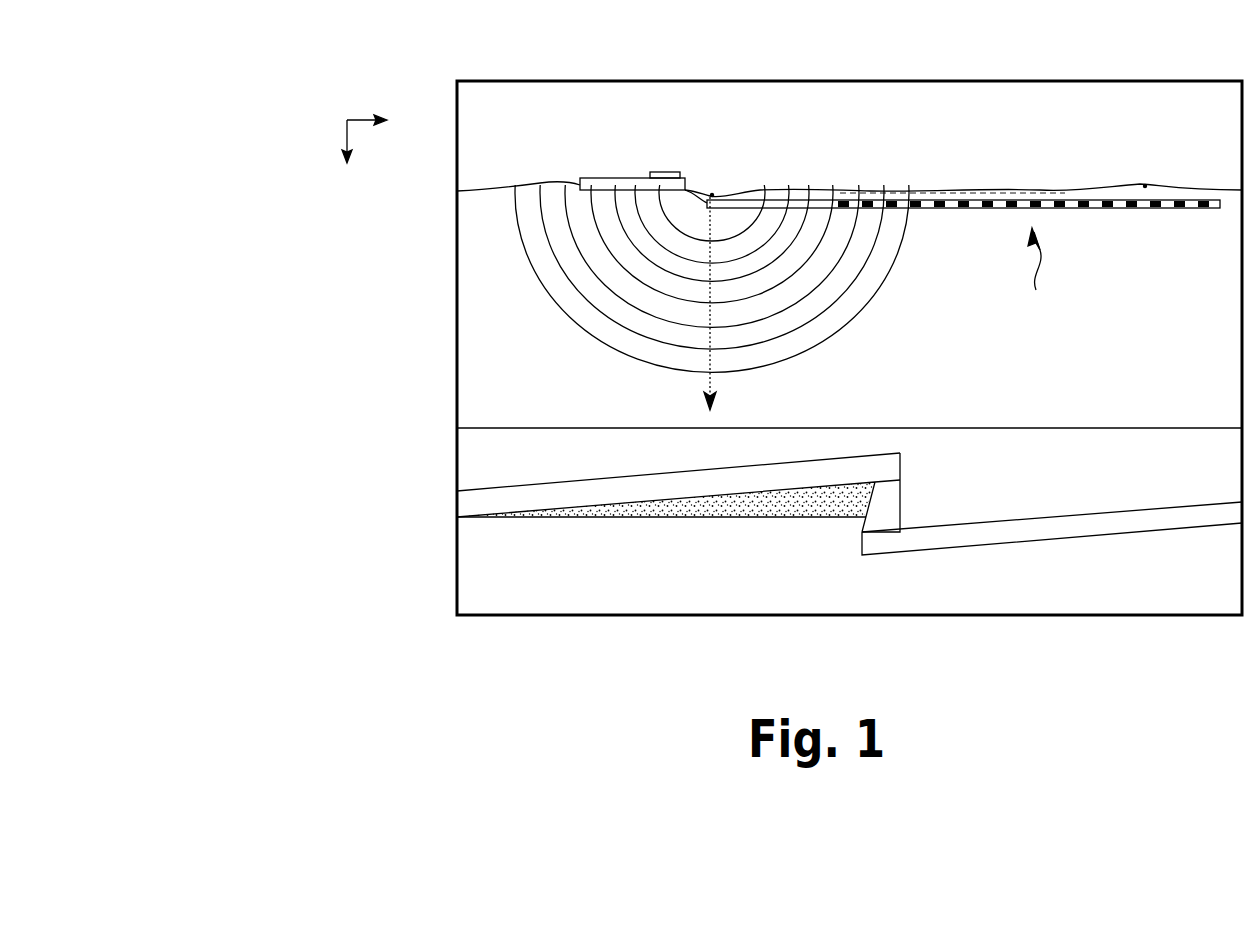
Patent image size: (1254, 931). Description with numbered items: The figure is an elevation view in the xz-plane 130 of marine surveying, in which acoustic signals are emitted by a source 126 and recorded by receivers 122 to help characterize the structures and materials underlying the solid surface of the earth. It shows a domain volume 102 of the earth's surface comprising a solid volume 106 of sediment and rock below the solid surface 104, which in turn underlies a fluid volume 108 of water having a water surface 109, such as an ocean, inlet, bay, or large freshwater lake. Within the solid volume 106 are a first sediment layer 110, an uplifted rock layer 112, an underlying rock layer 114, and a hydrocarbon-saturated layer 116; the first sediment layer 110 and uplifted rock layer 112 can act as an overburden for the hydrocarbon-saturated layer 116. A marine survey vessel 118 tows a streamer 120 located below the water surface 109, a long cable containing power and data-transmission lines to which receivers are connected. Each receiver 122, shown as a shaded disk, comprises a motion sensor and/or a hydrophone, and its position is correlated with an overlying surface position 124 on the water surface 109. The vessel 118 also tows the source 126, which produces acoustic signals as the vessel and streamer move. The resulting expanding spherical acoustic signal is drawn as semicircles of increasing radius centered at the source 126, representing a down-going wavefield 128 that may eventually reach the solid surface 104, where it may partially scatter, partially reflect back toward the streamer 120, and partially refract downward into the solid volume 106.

The domain volume 102 is at (367, 248).
The solid surface 104 is at (512, 428).
The solid volume 106 is at (475, 450).
The fluid volume 108 is at (475, 335).
The water surface 109 is at (982, 190).
The first sediment layer 110 is at (1105, 491).
The uplifted rock layer 112 is at (475, 506).
The underlying rock layer 114 is at (578, 603).
The hydrocarbon-saturated layer 116 is at (678, 517).
The marine survey vessel 118 is at (622, 178).
The streamer 120 is at (1047, 273).
The receiver 122 is at (1148, 208).
The surface position 124 is at (1145, 185).
The source 126 is at (712, 194).
The down-going wavefield 128 is at (872, 293).
The xz-plane 130 is at (347, 120).